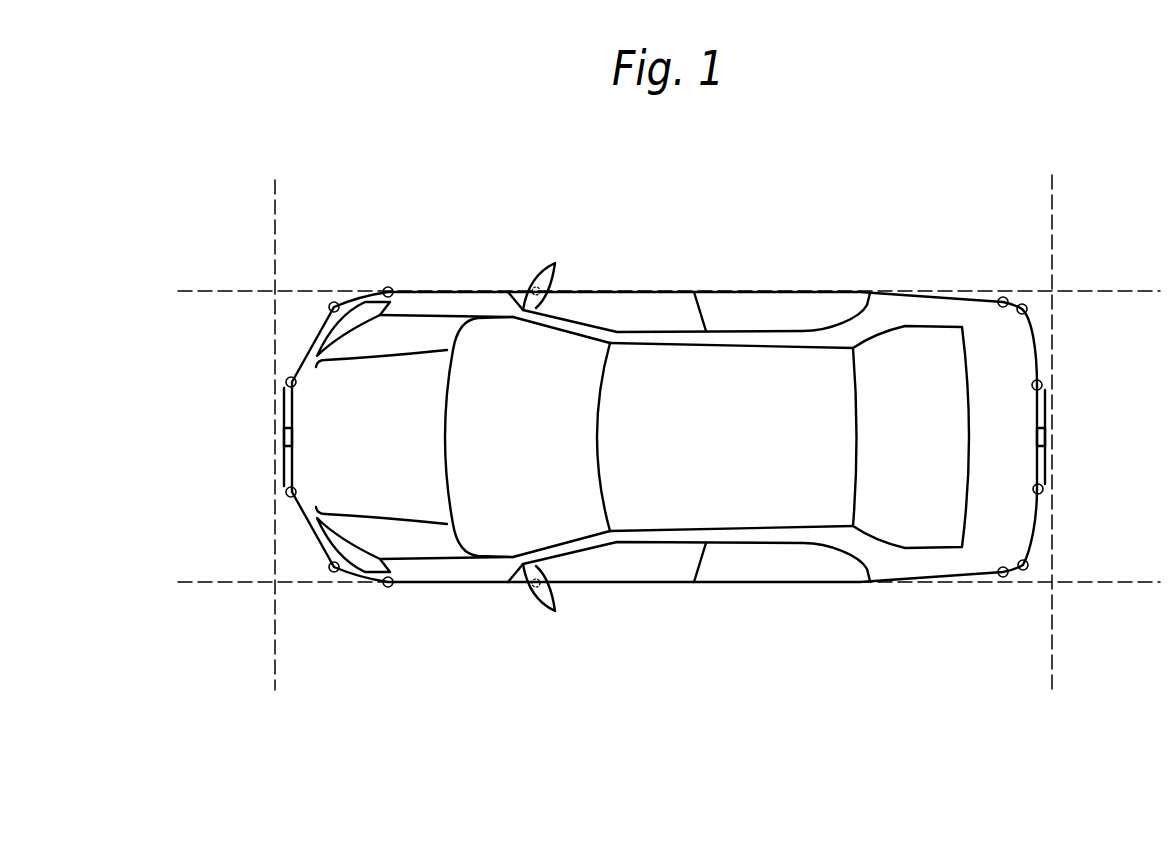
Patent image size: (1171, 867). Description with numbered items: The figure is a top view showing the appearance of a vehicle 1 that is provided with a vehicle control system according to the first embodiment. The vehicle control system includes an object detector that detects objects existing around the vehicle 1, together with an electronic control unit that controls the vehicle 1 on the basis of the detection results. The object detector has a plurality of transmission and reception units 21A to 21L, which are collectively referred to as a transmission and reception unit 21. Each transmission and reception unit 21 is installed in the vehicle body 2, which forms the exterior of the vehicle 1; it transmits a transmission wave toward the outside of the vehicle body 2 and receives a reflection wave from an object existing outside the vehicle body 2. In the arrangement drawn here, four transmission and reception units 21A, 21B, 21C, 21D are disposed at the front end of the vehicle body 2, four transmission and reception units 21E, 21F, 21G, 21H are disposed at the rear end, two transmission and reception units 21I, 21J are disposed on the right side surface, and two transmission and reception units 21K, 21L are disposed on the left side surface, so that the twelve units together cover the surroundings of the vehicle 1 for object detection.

The vehicle 1 is at (797, 193).
The vehicle body 2 is at (981, 292).
The transmission and reception unit 21 is at (670, 424).
The transmission and reception unit 21A is at (329, 307).
The transmission and reception unit 21B is at (286, 379).
The transmission and reception unit 21C is at (286, 491).
The transmission and reception unit 21D is at (329, 566).
The transmission and reception unit 21E is at (1027, 306).
The transmission and reception unit 21F is at (1098, 362).
The transmission and reception unit 21G is at (1043, 487).
The transmission and reception unit 21H is at (1028, 564).
The transmission and reception unit 21I is at (384, 288).
The transmission and reception unit 21J is at (1004, 297).
The transmission and reception unit 21K is at (386, 587).
The transmission and reception unit 21L is at (1003, 577).